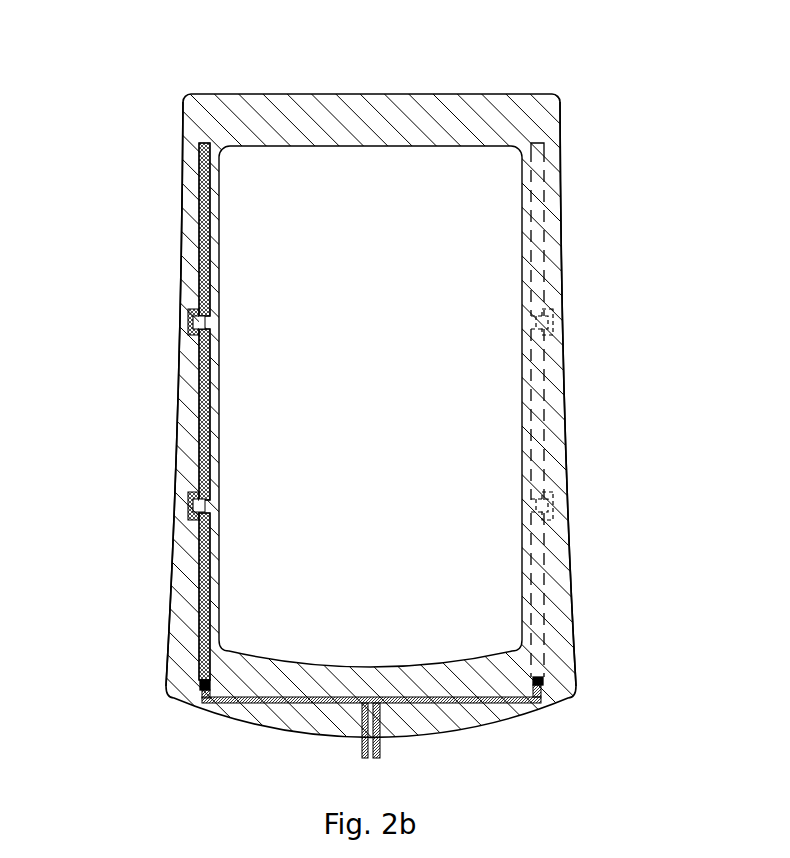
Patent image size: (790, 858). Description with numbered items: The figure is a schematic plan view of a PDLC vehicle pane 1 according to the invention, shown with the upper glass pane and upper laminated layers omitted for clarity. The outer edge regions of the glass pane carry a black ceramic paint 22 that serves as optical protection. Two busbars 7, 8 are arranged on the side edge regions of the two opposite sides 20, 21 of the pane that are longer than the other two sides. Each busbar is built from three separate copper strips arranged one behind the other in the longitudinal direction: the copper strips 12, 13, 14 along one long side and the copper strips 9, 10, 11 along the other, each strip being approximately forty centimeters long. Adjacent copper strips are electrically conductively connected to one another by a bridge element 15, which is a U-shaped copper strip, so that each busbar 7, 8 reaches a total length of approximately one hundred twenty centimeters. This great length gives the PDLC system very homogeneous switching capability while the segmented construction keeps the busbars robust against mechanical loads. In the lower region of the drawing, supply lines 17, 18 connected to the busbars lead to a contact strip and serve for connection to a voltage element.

The PDLC vehicle pane 1 is at (395, 389).
The black ceramic paint 22 is at (503, 110).
The side of the vehicle pane 21 is at (177, 383).
The side of the vehicle pane 20 is at (563, 383).
The copper strip 14 is at (205, 229).
The copper strip 13 is at (205, 413).
The copper strip 12 is at (205, 595).
The copper strip 11 is at (537, 231).
The copper strip 10 is at (537, 416).
The copper strip 9 is at (537, 595).
The bridge element 15 is at (190, 323).
The busbar 8 is at (200, 687).
The busbar 7 is at (542, 683).
The supply line 18 is at (358, 750).
The supply line 17 is at (381, 752).